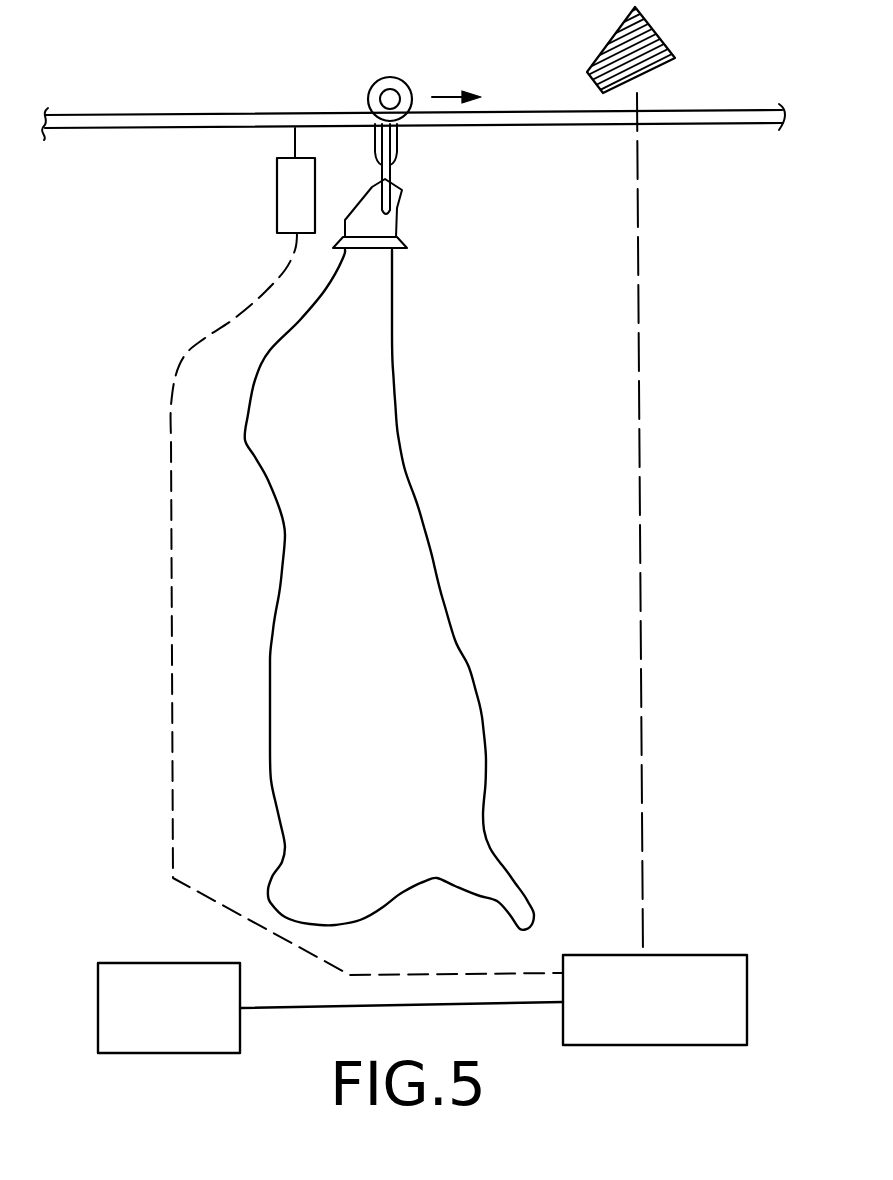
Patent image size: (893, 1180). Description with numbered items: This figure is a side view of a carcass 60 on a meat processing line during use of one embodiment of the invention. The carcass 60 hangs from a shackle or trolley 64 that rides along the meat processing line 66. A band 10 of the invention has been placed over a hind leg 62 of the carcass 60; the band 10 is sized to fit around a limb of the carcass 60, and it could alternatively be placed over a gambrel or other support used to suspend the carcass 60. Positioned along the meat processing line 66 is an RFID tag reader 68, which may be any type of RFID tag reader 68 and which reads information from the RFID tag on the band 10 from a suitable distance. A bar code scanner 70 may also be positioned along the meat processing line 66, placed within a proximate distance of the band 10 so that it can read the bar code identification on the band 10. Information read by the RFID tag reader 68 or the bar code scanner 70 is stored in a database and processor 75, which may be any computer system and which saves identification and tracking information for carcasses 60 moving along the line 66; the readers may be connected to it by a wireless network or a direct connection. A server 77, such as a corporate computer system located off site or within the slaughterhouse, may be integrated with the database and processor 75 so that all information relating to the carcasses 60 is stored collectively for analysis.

The band 10 is at (399, 243).
The carcass 60 is at (447, 692).
The hind leg 62 is at (383, 226).
The trolley 64 is at (370, 92).
The meat processing line 66 is at (716, 117).
The RFID tag reader 68 is at (612, 55).
The bar code scanner 70 is at (277, 183).
The database and processor 75 is at (671, 955).
The server 77 is at (133, 963).